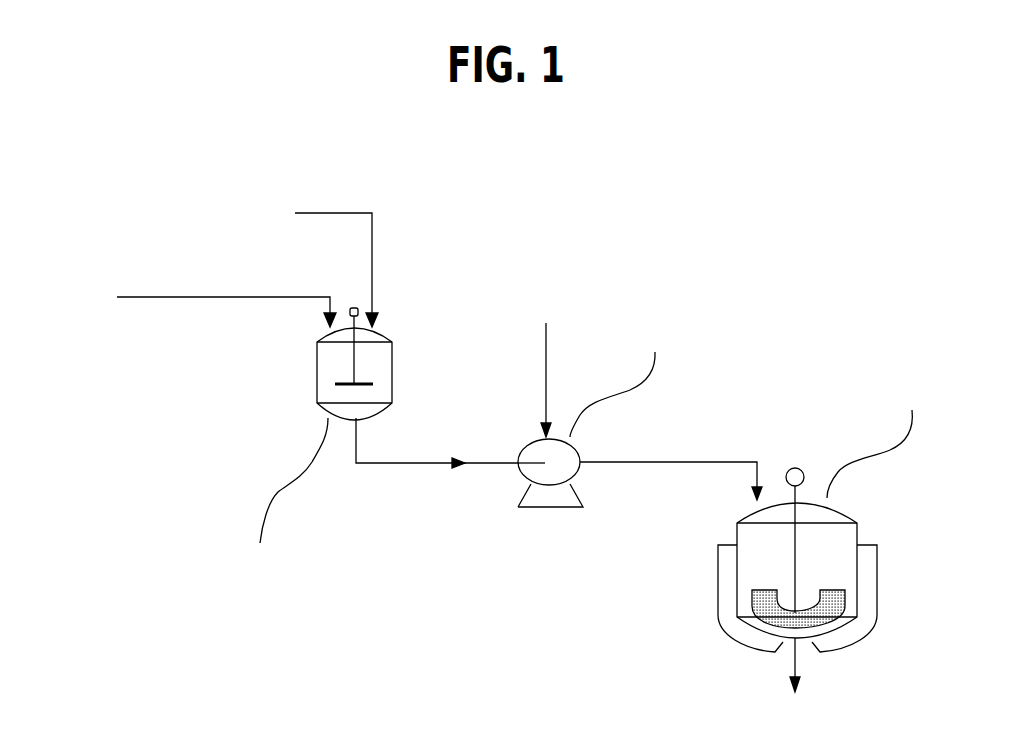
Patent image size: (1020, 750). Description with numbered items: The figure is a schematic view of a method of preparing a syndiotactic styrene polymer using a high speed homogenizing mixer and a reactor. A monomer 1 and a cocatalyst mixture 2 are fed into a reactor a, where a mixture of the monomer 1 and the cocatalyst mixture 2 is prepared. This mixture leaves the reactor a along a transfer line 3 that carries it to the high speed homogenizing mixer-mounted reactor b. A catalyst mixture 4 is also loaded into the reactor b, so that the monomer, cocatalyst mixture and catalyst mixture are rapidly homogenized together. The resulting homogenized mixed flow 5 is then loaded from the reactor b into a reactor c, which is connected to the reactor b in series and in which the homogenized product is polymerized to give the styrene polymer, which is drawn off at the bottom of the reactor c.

The monomer 1 is at (195, 301).
The cocatalyst mixture 2 is at (311, 264).
The mixture transfer line 3 is at (437, 443).
The catalyst mixture 4 is at (541, 357).
The homogenized mixed flow 5 is at (671, 461).
The reactor a is at (304, 454).
The high speed homogenizing mixer-mounted reactor b is at (603, 413).
The reactor c is at (829, 539).